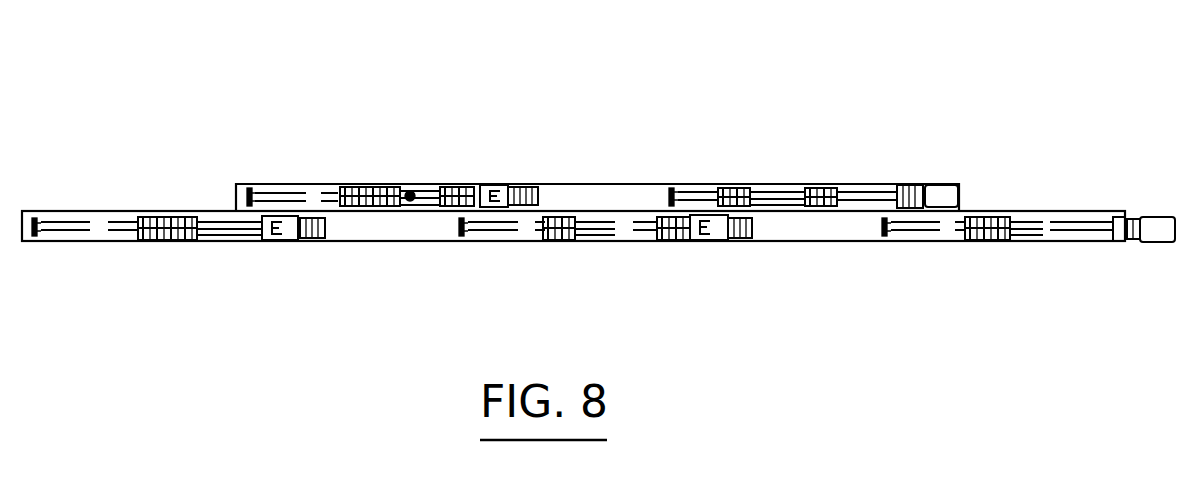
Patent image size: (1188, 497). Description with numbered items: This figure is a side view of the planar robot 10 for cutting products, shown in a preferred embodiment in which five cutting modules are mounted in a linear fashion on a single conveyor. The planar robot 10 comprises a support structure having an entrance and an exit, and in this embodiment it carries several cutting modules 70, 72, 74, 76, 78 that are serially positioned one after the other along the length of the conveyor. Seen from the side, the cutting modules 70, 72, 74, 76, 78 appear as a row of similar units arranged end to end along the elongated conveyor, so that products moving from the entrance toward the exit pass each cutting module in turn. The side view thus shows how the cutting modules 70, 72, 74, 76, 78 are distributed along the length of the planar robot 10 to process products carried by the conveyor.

The planar robot 10 is at (573, 130).
The cutting module 70 is at (1052, 210).
The cutting module 72 is at (823, 180).
The cutting module 74 is at (597, 213).
The cutting module 76 is at (413, 182).
The cutting module 78 is at (162, 212).